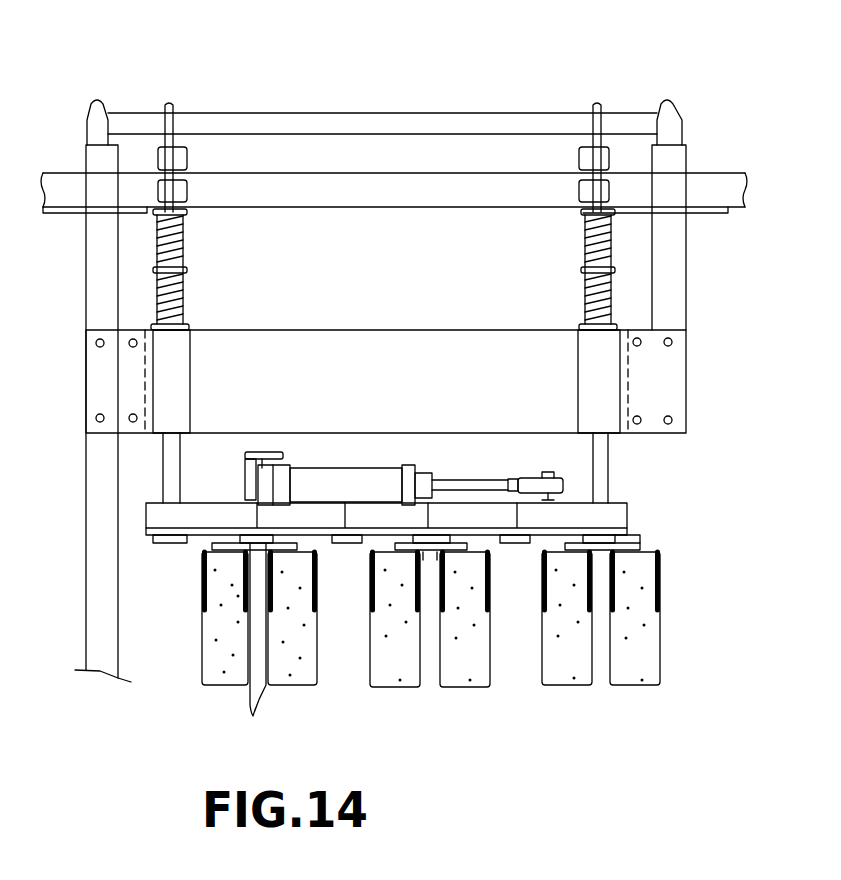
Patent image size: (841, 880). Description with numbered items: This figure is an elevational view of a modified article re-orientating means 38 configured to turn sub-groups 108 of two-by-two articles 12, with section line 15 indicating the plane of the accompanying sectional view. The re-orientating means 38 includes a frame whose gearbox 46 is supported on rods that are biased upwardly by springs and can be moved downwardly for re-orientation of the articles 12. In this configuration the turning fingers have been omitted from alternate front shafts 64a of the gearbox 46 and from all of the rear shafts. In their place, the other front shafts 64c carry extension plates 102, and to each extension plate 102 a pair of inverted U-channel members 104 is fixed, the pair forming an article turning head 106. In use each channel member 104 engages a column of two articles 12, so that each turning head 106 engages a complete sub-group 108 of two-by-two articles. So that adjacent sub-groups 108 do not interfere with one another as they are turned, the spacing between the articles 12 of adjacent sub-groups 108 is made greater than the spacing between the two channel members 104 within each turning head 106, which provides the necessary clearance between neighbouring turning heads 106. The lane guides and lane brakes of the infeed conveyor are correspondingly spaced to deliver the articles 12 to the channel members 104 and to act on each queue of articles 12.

The article 12 is at (651, 672).
The section line 15- 15 is at (570, 62).
The article re-orientating means 38 is at (708, 320).
The gearbox 46 is at (628, 521).
The front shaft 64a is at (157, 544).
The front shaft 64c is at (636, 541).
The extension plate 102 is at (640, 545).
The inverted U-channel member 104 is at (661, 590).
The article turning head 106 is at (326, 624).
The sub-group 108 is at (236, 690).